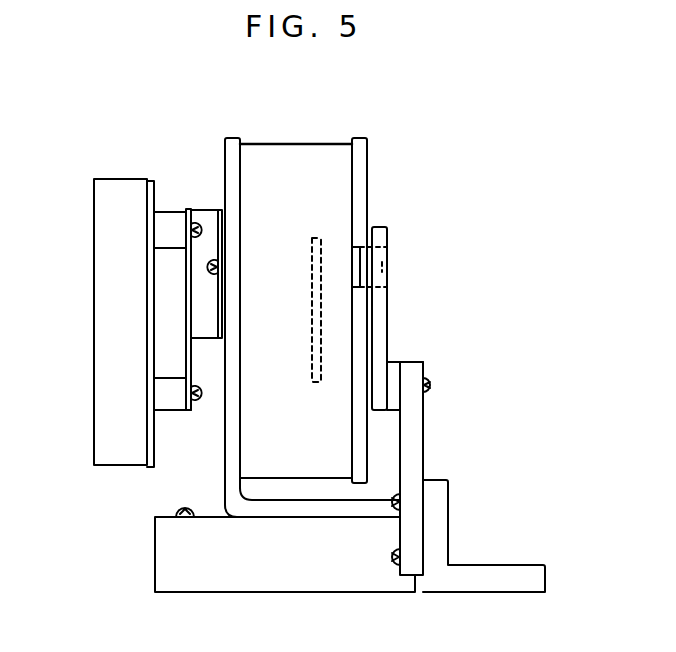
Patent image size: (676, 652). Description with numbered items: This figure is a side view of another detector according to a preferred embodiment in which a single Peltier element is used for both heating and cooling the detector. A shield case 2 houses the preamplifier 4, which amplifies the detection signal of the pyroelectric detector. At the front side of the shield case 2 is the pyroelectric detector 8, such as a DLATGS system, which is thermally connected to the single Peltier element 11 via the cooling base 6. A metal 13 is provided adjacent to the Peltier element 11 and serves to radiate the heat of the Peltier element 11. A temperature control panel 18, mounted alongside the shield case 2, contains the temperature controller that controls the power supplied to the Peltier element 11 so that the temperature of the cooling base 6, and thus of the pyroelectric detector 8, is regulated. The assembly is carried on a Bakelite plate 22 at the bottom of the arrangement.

The shield case 2 is at (323, 143).
The preamplifier 4 is at (323, 245).
The cooling base 6 is at (387, 305).
The pyroelectric detector 8 is at (387, 267).
The Peltier element 11 is at (390, 362).
The metal 13 is at (420, 442).
The temperature control panel 18 is at (157, 191).
The Bakelite plate 22 is at (167, 572).